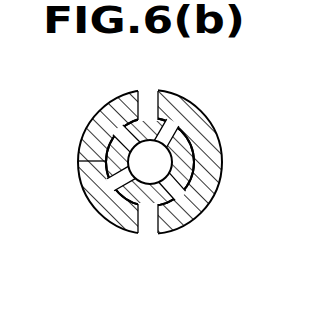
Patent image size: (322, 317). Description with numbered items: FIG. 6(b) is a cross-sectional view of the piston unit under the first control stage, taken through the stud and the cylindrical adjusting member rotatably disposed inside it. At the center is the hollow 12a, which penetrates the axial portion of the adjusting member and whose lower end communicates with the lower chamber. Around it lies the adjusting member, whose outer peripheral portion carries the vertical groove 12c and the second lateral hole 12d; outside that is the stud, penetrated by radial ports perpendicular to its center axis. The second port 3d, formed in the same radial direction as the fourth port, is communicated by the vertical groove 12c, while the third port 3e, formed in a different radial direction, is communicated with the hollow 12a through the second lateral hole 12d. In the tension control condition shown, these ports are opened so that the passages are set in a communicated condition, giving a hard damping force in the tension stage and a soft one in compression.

The second lateral hole 12d is at (116, 101).
The vertical groove 12c is at (180, 137).
The hollow 12a is at (168, 159).
The second port 3d is at (85, 150).
The third port 3e is at (149, 104).